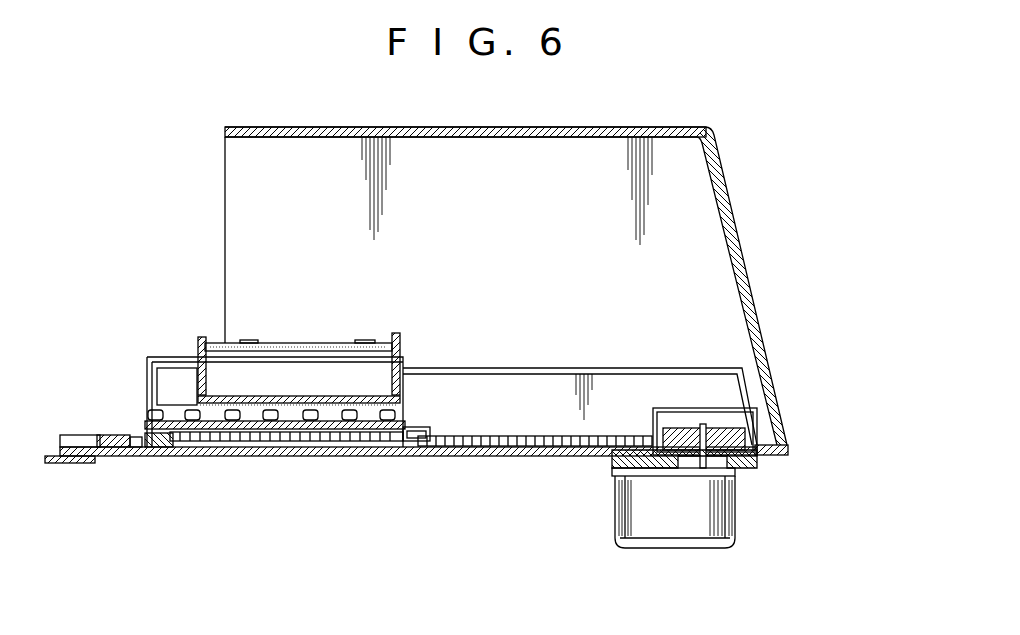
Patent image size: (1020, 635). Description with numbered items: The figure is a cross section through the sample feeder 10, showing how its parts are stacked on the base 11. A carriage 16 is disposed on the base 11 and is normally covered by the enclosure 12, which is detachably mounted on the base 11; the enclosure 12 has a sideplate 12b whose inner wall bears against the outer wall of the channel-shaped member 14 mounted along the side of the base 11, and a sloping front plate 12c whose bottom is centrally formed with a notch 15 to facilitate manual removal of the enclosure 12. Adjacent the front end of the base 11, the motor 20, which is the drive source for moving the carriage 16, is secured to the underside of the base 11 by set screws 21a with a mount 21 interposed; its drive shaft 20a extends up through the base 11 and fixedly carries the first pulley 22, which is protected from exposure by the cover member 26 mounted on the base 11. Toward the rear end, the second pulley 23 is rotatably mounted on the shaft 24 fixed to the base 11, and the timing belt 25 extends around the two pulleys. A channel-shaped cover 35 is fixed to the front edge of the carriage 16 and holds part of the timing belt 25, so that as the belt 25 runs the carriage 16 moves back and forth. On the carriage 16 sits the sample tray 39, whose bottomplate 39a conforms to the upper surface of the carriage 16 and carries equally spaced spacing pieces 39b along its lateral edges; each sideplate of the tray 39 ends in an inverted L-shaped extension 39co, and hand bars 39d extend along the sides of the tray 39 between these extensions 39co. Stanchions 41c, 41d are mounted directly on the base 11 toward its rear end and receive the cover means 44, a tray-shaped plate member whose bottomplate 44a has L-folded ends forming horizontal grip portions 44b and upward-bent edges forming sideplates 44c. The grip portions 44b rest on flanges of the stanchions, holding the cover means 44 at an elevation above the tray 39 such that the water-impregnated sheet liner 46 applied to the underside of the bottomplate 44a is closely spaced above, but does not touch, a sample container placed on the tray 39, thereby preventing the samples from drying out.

The sample feeder 10 is at (566, 103).
The base 11 is at (478, 457).
The enclosure 12 is at (500, 127).
The sideplate 12b is at (228, 165).
The front plate 12c is at (736, 208).
The channel-shaped member 14 is at (566, 368).
The notch 15 is at (777, 421).
The carriage 16 is at (348, 456).
The motor 20 is at (678, 548).
The drive shaft 20a is at (703, 462).
The mount 21 is at (615, 460).
The set screws 21a is at (622, 478).
The first pulley 22 is at (680, 428).
The second pulley 23 is at (110, 435).
The shaft 24 is at (134, 437).
The timing belt 25 is at (500, 436).
The cover member 26 is at (700, 430).
The channel-shaped cover 35 is at (418, 427).
The sample tray 39 is at (140, 395).
The bottomplate 39a is at (303, 441).
The spacing pieces 39b is at (230, 441).
The extension 39co is at (150, 372).
The hand bars 39d is at (180, 360).
The stanchion 41c is at (362, 340).
The stanchion 41d is at (248, 340).
The cover means 44 is at (325, 343).
The bottomplate 44a is at (292, 396).
The grip portions 44b is at (302, 345).
The sideplates 44c is at (203, 337).
The sheet liner 46 is at (332, 410).